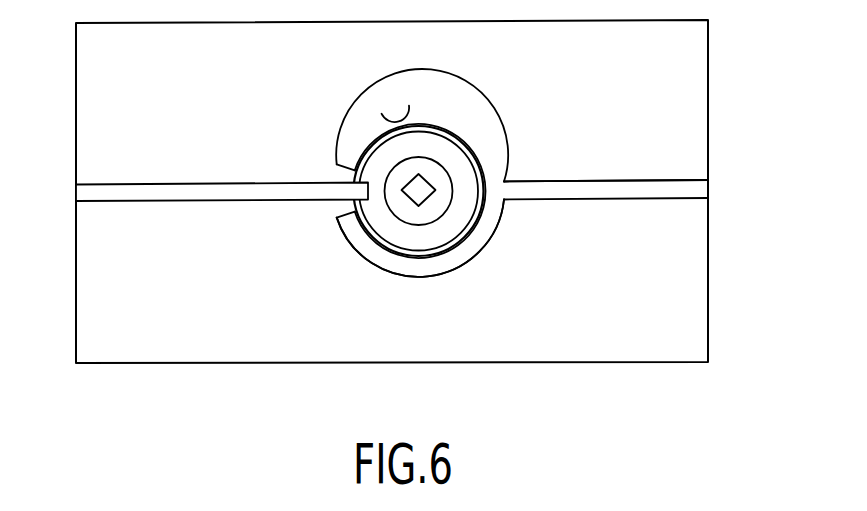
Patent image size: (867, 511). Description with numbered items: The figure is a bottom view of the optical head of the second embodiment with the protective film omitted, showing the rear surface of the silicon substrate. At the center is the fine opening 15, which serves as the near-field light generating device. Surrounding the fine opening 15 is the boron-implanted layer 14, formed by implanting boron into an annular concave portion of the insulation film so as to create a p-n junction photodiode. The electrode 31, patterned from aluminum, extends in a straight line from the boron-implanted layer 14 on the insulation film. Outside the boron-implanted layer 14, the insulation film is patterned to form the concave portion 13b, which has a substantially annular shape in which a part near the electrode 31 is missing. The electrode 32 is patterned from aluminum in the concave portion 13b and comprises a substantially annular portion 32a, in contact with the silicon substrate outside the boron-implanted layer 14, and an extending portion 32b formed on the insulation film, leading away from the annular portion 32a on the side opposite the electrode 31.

The concave portion 13b is at (383, 110).
The boron-implanted layer 14 is at (463, 181).
The fine opening 15 is at (428, 180).
The electrode 31 is at (113, 184).
The electrode 32 is at (669, 181).
The substantially annular portion 32a is at (472, 242).
The extending portion 32b is at (606, 181).